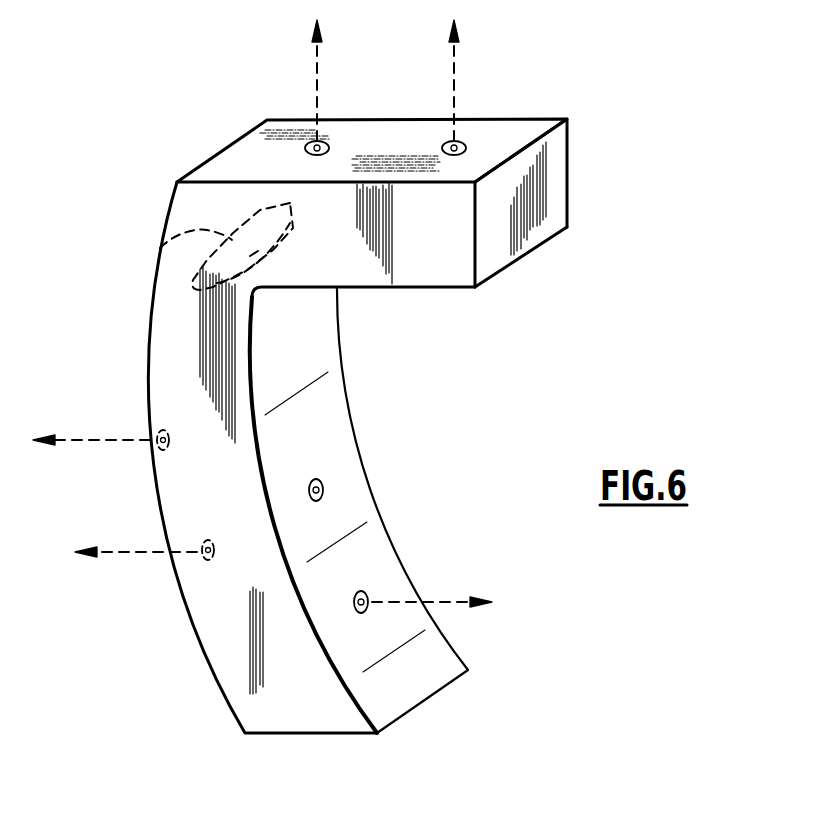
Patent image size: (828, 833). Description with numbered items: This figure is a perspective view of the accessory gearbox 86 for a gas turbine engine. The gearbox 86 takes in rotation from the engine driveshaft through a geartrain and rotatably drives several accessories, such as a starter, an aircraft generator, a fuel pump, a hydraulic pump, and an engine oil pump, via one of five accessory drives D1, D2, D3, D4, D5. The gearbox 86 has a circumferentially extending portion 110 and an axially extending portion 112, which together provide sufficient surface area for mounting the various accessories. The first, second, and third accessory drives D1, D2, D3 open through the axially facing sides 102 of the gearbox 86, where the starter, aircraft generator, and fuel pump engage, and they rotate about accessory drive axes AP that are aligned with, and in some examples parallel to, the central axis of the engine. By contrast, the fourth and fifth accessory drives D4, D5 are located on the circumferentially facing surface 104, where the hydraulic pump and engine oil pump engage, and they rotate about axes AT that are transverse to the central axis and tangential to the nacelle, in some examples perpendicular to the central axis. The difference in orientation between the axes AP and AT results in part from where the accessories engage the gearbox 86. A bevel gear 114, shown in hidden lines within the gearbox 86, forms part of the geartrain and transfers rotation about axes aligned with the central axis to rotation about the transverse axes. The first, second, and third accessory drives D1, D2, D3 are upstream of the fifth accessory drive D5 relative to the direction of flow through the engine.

The accessory gearbox 86 is at (672, 188).
The axially facing side 102 is at (430, 650).
The circumferentially facing surface 104 is at (387, 148).
The circumferentially extending portion 110 is at (408, 433).
The axially extending portion 112 is at (436, 307).
The bevel gear 114 is at (160, 248).
The first accessory drive D1 is at (369, 597).
The second accessory drive D2 is at (153, 452).
The third accessory drive D3 is at (205, 560).
The fourth accessory drive D4 is at (304, 143).
The fifth accessory drive D5 is at (469, 142).
The transverse accessory drive axis AT is at (455, 63).
The aligned accessory drive axis AP is at (455, 600).